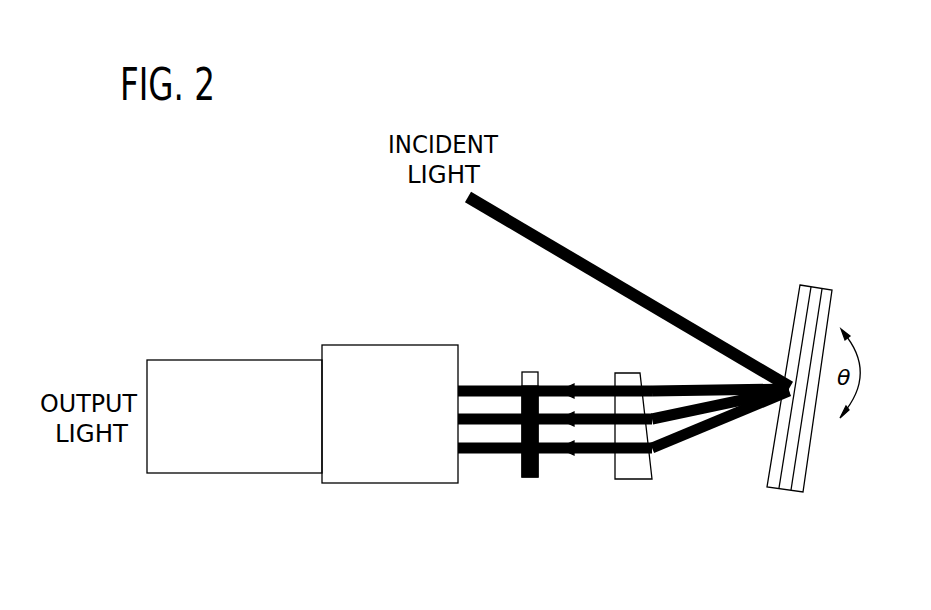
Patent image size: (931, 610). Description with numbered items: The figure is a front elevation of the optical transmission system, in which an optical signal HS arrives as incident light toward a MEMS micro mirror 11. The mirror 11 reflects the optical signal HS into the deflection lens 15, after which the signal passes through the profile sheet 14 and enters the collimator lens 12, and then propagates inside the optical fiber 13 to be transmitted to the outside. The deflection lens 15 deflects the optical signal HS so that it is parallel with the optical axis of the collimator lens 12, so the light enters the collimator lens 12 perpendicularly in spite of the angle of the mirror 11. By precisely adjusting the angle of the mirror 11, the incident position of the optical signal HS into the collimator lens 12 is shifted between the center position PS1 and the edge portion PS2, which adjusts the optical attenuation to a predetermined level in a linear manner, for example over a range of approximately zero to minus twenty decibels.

The mirror 11 is at (773, 491).
The collimator lens 12 is at (391, 483).
The optical fiber 13 is at (235, 458).
The profile sheet 14 is at (528, 478).
The deflection lens 15 is at (631, 479).
The optical signal HS is at (590, 259).
The center position PS1 is at (462, 392).
The edge portion PS2 is at (458, 483).